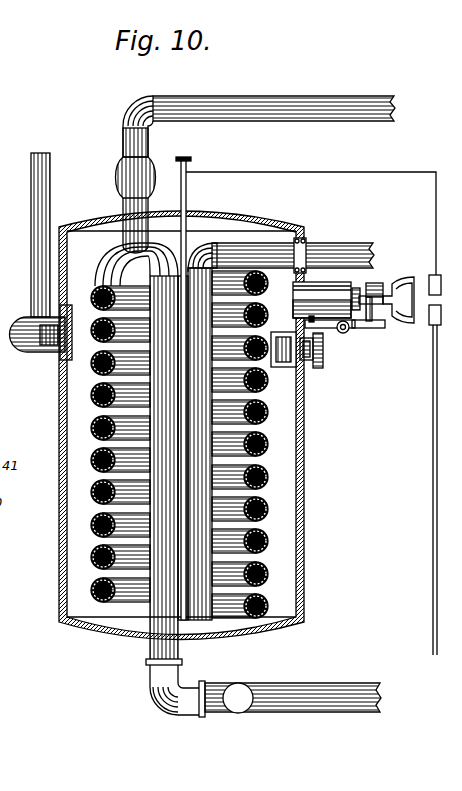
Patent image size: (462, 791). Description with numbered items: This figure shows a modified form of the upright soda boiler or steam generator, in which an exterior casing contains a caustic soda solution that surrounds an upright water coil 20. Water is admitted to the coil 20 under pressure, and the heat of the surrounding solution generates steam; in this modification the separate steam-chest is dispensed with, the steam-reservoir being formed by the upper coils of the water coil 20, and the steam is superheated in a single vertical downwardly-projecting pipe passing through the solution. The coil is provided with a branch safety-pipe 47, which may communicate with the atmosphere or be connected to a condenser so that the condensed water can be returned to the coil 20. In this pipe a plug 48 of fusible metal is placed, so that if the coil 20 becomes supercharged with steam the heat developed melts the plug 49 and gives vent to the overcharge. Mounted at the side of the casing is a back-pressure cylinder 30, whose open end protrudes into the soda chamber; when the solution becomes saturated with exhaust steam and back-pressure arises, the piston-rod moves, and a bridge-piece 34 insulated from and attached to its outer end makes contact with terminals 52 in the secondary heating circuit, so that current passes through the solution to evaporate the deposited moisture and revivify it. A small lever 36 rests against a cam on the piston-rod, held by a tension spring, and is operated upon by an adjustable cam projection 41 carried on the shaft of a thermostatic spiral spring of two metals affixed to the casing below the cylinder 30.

The water coil 20 is at (268, 413).
The back-pressure cylinder 30 is at (326, 307).
The bridge-piece 34 is at (398, 292).
The small lever 36 is at (360, 329).
The adjustable cam projection 41 is at (323, 354).
The branch safety-pipe 47 is at (351, 96).
The fusible metal plug 48 is at (125, 160).
The plug 49 is at (125, 183).
The insulator blocks 52 is at (438, 290).